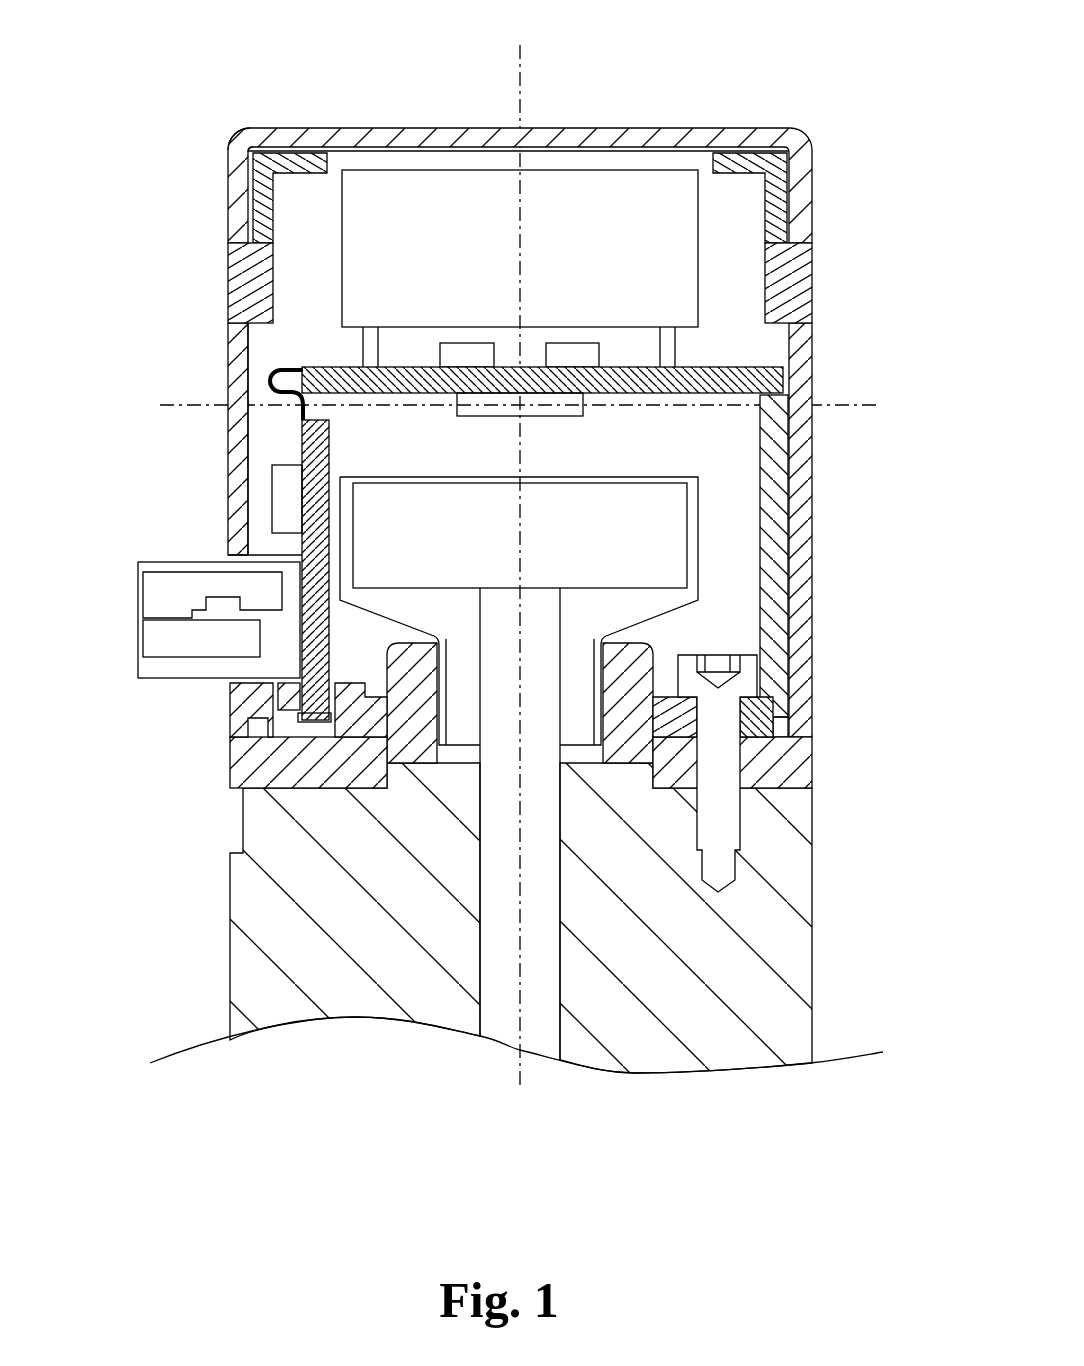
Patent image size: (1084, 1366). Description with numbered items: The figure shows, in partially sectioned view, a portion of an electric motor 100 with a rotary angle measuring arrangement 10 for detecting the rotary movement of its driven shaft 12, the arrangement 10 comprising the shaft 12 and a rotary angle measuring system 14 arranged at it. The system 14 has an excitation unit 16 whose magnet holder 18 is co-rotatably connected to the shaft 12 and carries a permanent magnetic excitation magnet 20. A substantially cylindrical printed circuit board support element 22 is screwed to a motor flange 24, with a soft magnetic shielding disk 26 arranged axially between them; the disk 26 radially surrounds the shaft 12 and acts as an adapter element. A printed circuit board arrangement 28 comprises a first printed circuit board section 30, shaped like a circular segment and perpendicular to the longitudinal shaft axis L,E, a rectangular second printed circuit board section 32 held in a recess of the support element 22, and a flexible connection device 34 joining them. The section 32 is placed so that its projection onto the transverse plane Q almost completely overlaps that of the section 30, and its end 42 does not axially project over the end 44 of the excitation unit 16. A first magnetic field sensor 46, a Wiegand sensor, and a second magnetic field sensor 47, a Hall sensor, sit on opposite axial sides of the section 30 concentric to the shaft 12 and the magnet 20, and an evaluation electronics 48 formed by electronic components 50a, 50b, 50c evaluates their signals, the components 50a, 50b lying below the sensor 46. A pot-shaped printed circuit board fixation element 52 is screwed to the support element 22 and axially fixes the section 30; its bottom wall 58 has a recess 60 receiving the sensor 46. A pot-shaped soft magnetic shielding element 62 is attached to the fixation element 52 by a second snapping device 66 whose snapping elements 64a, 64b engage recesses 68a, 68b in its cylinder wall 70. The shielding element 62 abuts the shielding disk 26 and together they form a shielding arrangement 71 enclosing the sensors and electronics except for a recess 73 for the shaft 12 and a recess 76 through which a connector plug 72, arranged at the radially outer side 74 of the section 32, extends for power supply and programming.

The rotary angle measuring arrangement 10 is at (808, 85).
The shaft 12 is at (500, 960).
The rotary angle measuring system 14 is at (857, 553).
The excitation unit 16 is at (705, 615).
The magnet holder 18 is at (690, 510).
The excitation magnet 20 is at (660, 490).
The printed circuit board support element 22 is at (780, 478).
The motor flange 24 is at (280, 945).
The shielding disk 26 is at (250, 768).
The printed circuit board arrangement 28 is at (398, 430).
The first printed circuit board section 30 is at (330, 375).
The second printed circuit board section 32 is at (302, 447).
The connection device 34 is at (268, 380).
The end of the second printed circuit board section 42 is at (330, 745).
The end of the excitation unit 44 is at (573, 745).
The first magnetic field sensor 46 is at (555, 245).
The second magnetic field sensor 47 is at (565, 412).
The evaluation electronics 48 is at (255, 483).
The electronic component 50a is at (470, 352).
The electronic component 50b is at (583, 350).
The electronic component 50c is at (282, 500).
The printed circuit board fixation element 52 is at (258, 157).
The bottom wall 58 is at (300, 163).
The recess 60 is at (350, 160).
The shielding element 62 is at (455, 125).
The snapping element 64a is at (240, 280).
The snapping element 64b is at (813, 300).
The second snapping device 66 is at (838, 288).
The recess 68a is at (255, 240).
The recess 68b is at (803, 248).
The cylinder wall 70 is at (805, 518).
The shielding arrangement 71 is at (838, 775).
The connector plug 72 is at (137, 660).
The recess 73 is at (453, 753).
The radially outer side 74 is at (280, 700).
The recess 76 is at (235, 578).
The electric motor 100 is at (235, 1105).
The transverse plane Q is at (480, 393).
The longitudinal shaft axis and longitudinal plane L,E is at (521, 1073).